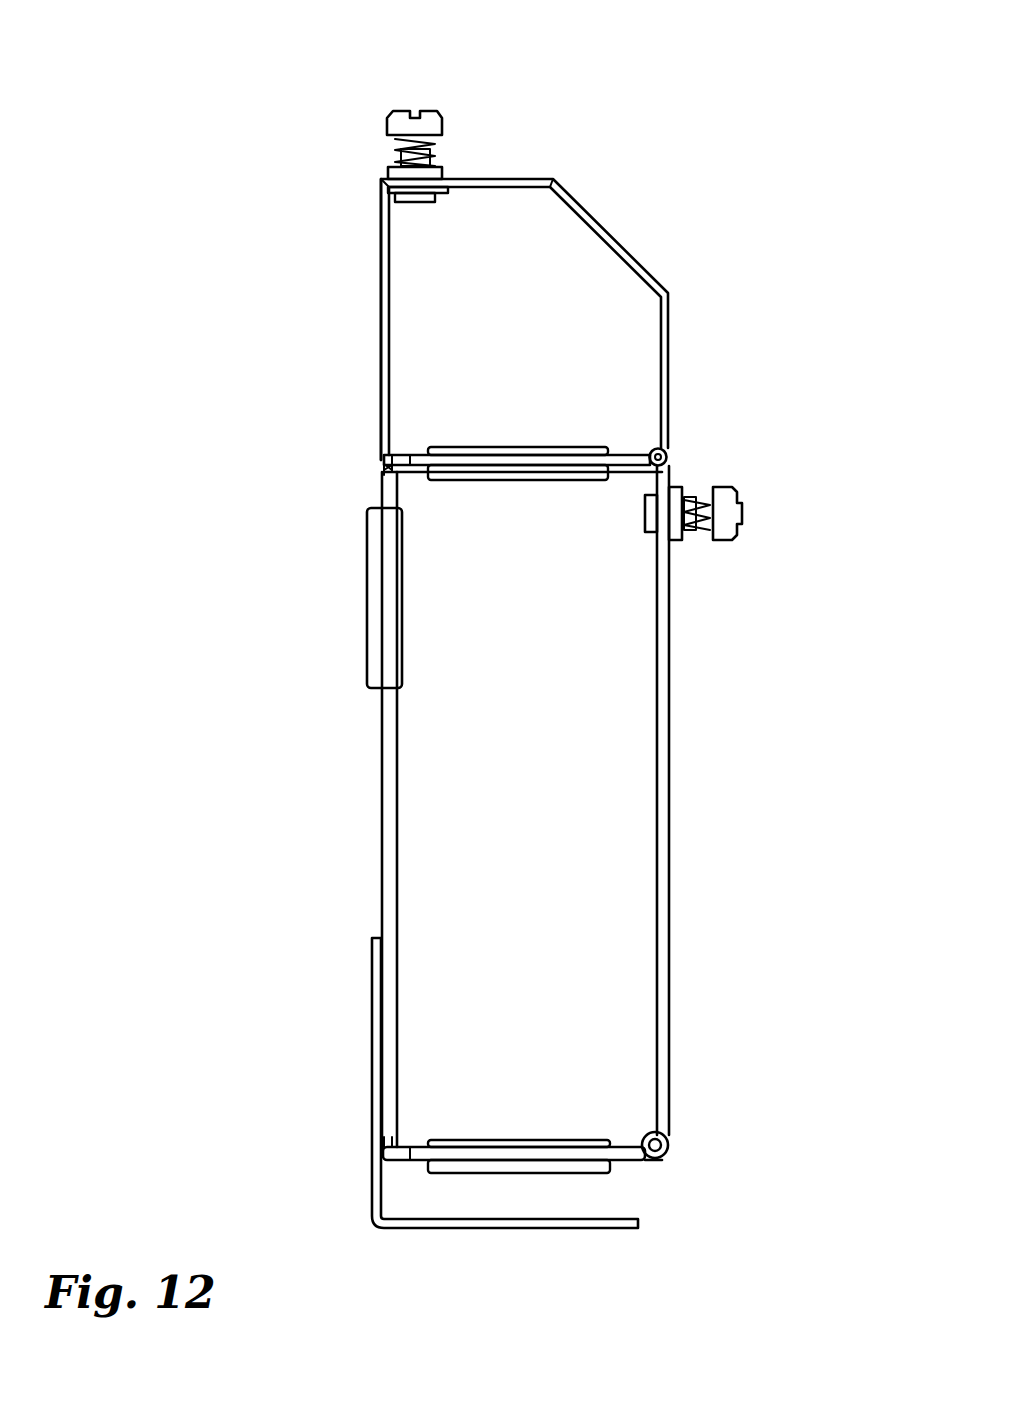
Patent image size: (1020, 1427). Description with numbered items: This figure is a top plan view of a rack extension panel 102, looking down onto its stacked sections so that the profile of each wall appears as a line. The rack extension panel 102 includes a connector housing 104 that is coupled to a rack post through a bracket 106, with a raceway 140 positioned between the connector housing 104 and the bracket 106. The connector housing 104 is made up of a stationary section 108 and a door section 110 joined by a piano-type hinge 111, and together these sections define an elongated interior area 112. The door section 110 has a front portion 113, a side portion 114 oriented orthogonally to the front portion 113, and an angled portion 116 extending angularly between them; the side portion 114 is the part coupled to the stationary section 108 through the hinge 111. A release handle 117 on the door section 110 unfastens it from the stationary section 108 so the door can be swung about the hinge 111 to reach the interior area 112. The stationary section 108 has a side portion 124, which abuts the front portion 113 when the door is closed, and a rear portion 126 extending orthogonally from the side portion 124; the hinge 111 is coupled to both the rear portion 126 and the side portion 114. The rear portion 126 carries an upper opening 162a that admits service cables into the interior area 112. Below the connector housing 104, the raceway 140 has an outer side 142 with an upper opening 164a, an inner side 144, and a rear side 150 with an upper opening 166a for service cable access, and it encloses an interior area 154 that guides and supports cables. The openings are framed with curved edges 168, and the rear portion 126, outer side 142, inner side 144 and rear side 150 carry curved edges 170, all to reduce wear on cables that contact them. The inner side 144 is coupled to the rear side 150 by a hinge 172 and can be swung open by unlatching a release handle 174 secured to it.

The rack extension panel 102 is at (798, 44).
The connector housing 104 is at (615, 165).
The bracket 106 is at (485, 1228).
The stationary section 108 is at (330, 246).
The door section 110 is at (563, 132).
The piano-type hinge 111 is at (668, 456).
The elongated interior area 112 is at (455, 322).
The front portion 113 is at (507, 178).
The side portion 114 is at (670, 367).
The angled portion 116 is at (652, 268).
The release handle 117 is at (418, 110).
The side portion 124 is at (380, 380).
The rear portion 126 is at (588, 476).
The raceway 140 is at (320, 745).
The outer side 142 is at (382, 872).
The inner side 144 is at (670, 764).
The rear side 150 is at (627, 1160).
The interior area 154 is at (485, 818).
The upper opening 162a is at (545, 418).
The upper opening 164a is at (335, 553).
The upper opening 166a is at (495, 1112).
The curved edges 168 is at (485, 447).
The curved edges 170 is at (410, 456).
The hinge 172 is at (668, 1143).
The release handle 174 is at (742, 500).